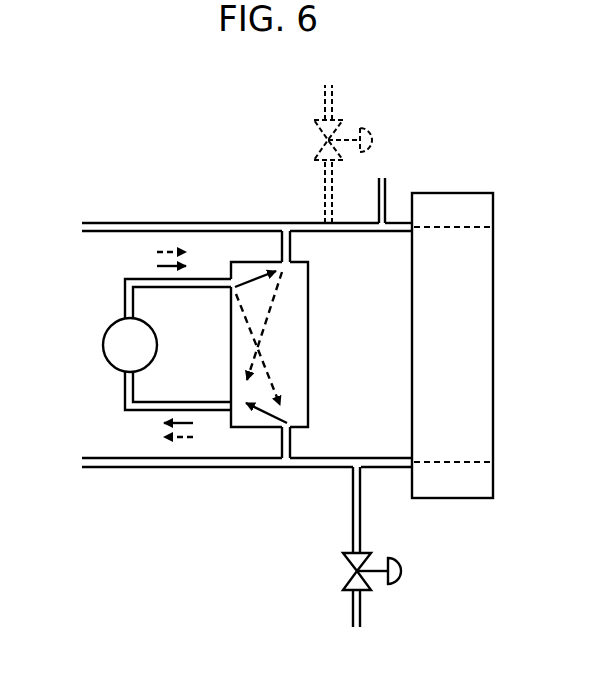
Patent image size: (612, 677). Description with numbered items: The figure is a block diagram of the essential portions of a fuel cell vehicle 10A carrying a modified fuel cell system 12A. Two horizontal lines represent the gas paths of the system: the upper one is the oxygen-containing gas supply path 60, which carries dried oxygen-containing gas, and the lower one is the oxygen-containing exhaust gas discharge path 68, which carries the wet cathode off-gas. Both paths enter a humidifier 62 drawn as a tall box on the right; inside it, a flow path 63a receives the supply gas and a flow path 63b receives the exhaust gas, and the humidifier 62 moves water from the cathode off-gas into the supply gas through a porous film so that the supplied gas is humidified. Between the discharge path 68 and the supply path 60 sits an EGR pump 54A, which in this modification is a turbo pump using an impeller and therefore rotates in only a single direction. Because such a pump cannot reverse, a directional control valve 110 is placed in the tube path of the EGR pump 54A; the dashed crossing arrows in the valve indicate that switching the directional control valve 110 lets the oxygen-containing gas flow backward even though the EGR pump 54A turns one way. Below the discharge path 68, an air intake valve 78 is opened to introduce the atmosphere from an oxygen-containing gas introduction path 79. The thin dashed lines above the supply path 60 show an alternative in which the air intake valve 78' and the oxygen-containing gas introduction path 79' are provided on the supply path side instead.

The fuel cell vehicle 10A is at (207, 108).
The fuel cell system 12A is at (153, 209).
The EGR pump 54A is at (103, 332).
The oxygen-containing gas supply path 60 is at (377, 234).
The humidifier 62 is at (493, 332).
The flow path 63a is at (427, 230).
The flow path 63b is at (427, 458).
The oxygen-containing exhaust gas discharge path 68 is at (374, 458).
The air intake valve 78 is at (400, 571).
The oxygen-containing gas introduction path 79 is at (388, 608).
The air intake valve 78' is at (373, 140).
The oxygen-containing gas introduction path 79' is at (362, 154).
The directional control valve 110 is at (308, 349).